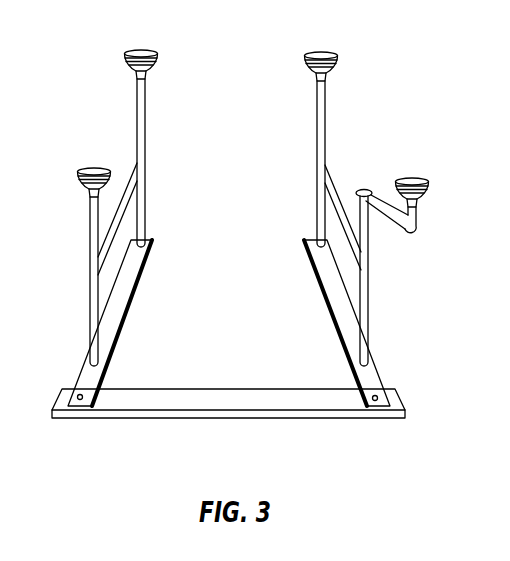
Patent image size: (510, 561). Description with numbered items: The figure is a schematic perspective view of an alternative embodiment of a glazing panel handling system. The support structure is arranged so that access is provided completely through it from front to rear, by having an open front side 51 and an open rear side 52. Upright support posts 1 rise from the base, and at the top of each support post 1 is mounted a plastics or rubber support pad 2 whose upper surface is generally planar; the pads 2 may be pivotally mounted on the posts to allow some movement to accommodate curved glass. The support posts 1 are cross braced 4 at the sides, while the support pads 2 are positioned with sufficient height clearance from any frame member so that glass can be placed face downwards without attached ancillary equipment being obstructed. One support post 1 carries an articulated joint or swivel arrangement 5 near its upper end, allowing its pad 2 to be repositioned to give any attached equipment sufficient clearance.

The support post 1 is at (84, 305).
The support pad 2 is at (147, 51).
The cross brace 4 is at (124, 179).
The articulated joint or swivel arrangement 5 is at (386, 237).
The open front side 51 is at (243, 450).
The open rear side 52 is at (244, 173).